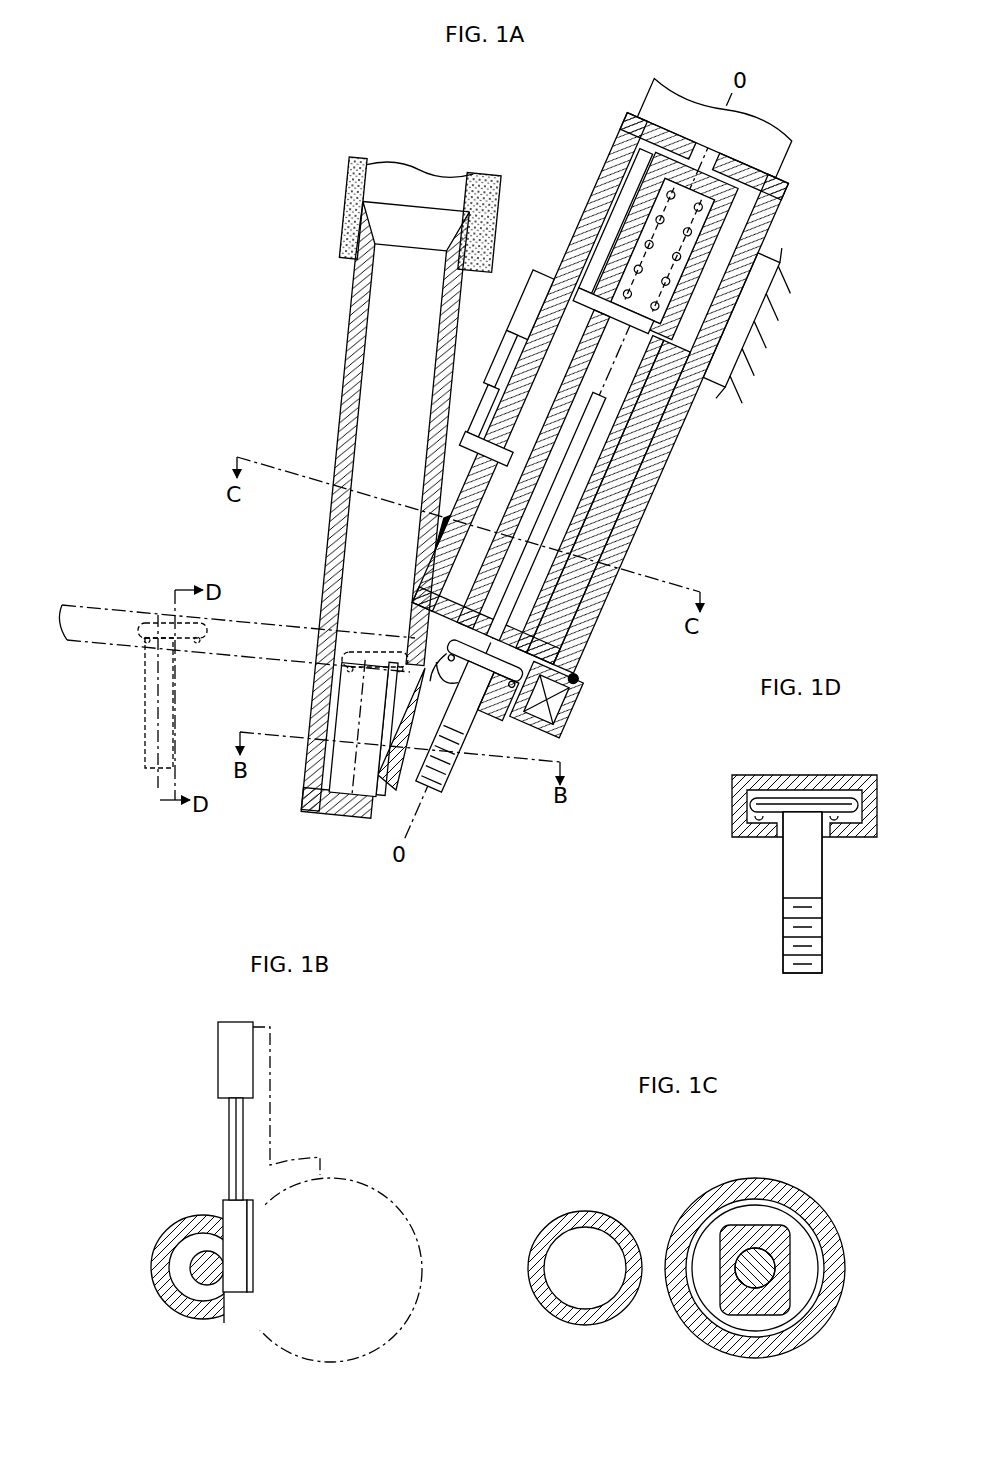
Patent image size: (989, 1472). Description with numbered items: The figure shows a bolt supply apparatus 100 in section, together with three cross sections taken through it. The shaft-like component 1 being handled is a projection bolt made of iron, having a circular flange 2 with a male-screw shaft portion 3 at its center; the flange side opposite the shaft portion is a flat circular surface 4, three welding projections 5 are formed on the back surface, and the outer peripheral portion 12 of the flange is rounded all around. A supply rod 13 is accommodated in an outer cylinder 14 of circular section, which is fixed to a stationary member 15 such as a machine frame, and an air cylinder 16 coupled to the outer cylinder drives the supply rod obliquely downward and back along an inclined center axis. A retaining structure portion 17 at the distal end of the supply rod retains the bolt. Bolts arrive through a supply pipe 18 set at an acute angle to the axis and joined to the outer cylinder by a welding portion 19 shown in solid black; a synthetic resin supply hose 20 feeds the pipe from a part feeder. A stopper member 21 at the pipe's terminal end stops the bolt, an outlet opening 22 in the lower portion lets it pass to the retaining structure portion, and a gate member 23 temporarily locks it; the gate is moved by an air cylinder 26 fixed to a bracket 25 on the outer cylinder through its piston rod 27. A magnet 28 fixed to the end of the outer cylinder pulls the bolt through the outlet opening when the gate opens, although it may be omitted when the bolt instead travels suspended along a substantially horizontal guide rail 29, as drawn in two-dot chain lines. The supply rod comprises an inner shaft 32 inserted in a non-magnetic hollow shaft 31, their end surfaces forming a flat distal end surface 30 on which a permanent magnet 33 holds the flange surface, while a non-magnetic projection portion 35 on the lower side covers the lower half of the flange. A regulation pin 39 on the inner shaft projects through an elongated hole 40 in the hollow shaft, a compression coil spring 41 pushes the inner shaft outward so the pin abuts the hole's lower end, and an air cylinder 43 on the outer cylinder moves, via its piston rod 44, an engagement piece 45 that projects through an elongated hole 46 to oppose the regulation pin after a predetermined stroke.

In FIG. 1A, the bolt supply apparatus 100 is at (788, 112).
In FIG. 1A, the shaft-like component 1 is at (338, 687).
In FIG. 1D, the shaft-like component 1 is at (772, 970).
In FIG. 1D, the circular flange 2 is at (850, 798).
In FIG. 1A, the shaft portion 3 is at (442, 790).
In FIG. 1D, the shaft portion 3 is at (783, 924).
In FIG. 1B, the shaft portion 3 is at (190, 1268).
In FIG. 1D, the surface 4 is at (790, 798).
In FIG. 1D, the projections 5 is at (755, 835).
In FIG. 1D, the outer peripheral portion 12 is at (805, 810).
In FIG. 1A, the supply rod 13 is at (634, 458).
In FIG. 1C, the supply rod 13 is at (747, 1220).
In FIG. 1A, the outer cylinder 14 is at (668, 432).
In FIG. 1C, the outer cylinder 14 is at (815, 1198).
In FIG. 1B, the outer cylinder 14 is at (385, 1200).
In FIG. 1A, the stationary member 15 is at (758, 322).
In FIG. 1A, the air cylinder 16 is at (790, 160).
In FIG. 1A, the retaining structure portion 17 is at (437, 628).
In FIG. 1A, the supply pipe 18 is at (343, 370).
In FIG. 1C, the supply pipe 18 is at (582, 1212).
In FIG. 1B, the supply pipe 18 is at (165, 1222).
In FIG. 1A, the welding portion 19 is at (438, 520).
In FIG. 1A, the supply hose 20 is at (340, 198).
In FIG. 1A, the stopper member 21 is at (355, 812).
In FIG. 1B, the stopper member 21 is at (188, 1288).
In FIG. 1A, the outlet opening 22 is at (381, 776).
In FIG. 1B, the outlet opening 22 is at (233, 1293).
In FIG. 1A, the gate member 23 is at (385, 726).
In FIG. 1B, the gate member 23 is at (246, 1241).
In FIG. 1B, the bracket 25 is at (272, 1118).
In FIG. 1B, the air cylinder 26 is at (218, 1057).
In FIG. 1B, the piston rod 27 is at (229, 1150).
In FIG. 1A, the magnet 28 is at (560, 715).
In FIG. 1A, the guide rail 29 is at (100, 600).
In FIG. 1D, the guide rail 29 is at (878, 808).
In FIG. 1A, the distal end surface 30 is at (443, 679).
In FIG. 1A, the hollow shaft 31 is at (590, 512).
In FIG. 1C, the hollow shaft 31 is at (781, 1314).
In FIG. 1A, the inner shaft 32 is at (543, 553).
In FIG. 1C, the inner shaft 32 is at (776, 1272).
In FIG. 1A, the magnet 33 is at (520, 660).
In FIG. 1A, the projection portion 35 is at (512, 730).
In FIG. 1A, the regulation pin 39 is at (590, 268).
In FIG. 1A, the elongated hole 40 is at (608, 255).
In FIG. 1A, the compression coil spring 41 is at (660, 180).
In FIG. 1A, the air cylinder 43 is at (520, 300).
In FIG. 1A, the piston rod 44 is at (500, 385).
In FIG. 1A, the engagement piece 45 is at (463, 440).
In FIG. 1A, the elongated hole 46 is at (500, 410).